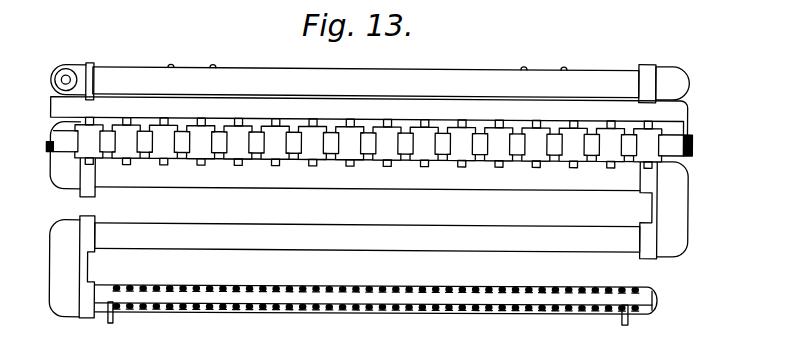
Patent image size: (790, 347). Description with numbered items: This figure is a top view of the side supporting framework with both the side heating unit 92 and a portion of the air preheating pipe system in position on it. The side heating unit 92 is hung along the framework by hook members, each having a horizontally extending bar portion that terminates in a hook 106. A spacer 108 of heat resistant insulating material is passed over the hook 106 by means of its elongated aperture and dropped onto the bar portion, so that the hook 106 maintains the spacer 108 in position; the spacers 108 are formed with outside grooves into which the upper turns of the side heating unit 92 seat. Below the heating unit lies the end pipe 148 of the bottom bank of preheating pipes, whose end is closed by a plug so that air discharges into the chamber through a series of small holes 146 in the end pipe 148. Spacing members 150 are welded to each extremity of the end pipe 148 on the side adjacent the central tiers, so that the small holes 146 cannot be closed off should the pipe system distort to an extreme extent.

The side heating unit 92 is at (218, 143).
The hook 106 is at (387, 166).
The spacer 108 is at (268, 164).
The small holes 146 is at (327, 290).
The end pipe 148 is at (531, 297).
The spacing members 150 is at (111, 323).